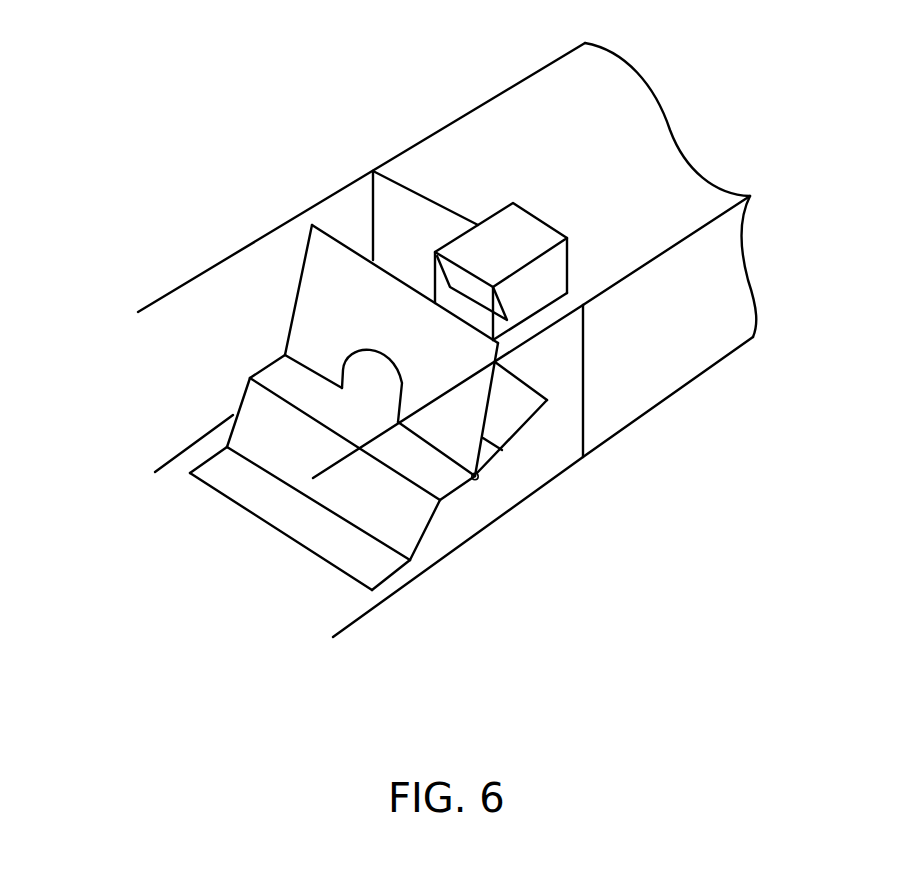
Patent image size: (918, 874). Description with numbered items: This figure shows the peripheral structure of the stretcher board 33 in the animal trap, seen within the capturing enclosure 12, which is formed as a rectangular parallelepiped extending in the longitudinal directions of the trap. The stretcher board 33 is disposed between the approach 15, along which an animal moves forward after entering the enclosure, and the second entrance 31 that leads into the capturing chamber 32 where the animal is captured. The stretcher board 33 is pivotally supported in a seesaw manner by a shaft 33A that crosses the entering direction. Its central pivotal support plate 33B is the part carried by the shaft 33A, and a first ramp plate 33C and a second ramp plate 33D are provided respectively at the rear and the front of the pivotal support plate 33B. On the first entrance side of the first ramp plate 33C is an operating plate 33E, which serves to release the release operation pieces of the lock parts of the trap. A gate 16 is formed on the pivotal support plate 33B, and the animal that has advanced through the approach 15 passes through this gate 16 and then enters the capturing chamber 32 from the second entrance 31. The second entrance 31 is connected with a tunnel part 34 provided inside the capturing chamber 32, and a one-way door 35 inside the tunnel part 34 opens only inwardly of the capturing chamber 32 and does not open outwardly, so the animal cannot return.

The capturing enclosure 12 is at (447, 340).
The approach 15 is at (180, 369).
The gate 16 is at (363, 382).
The second entrance 31 is at (450, 298).
The capturing chamber 32 is at (683, 336).
The stretcher board 33 is at (387, 447).
The shaft 33A is at (478, 480).
The pivotal support plate 33B is at (363, 350).
The first ramp plate 33C is at (268, 443).
The second ramp plate 33D is at (512, 412).
The operating plate 33E is at (323, 540).
The tunnel part 34 is at (519, 243).
The one-way door 35 is at (468, 287).